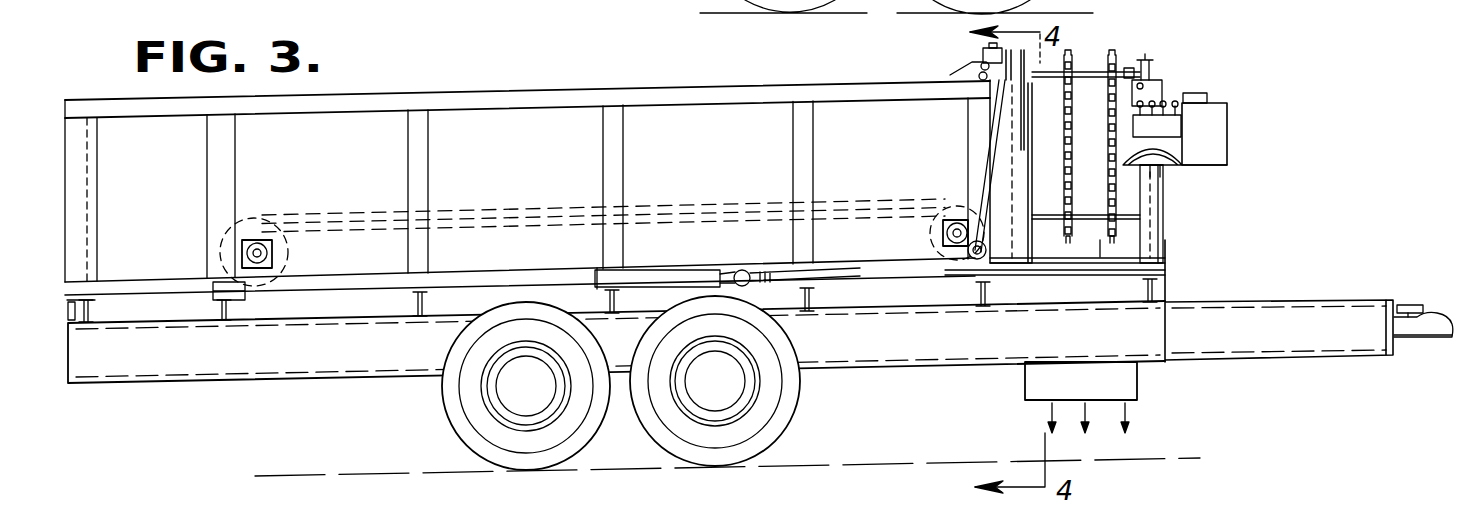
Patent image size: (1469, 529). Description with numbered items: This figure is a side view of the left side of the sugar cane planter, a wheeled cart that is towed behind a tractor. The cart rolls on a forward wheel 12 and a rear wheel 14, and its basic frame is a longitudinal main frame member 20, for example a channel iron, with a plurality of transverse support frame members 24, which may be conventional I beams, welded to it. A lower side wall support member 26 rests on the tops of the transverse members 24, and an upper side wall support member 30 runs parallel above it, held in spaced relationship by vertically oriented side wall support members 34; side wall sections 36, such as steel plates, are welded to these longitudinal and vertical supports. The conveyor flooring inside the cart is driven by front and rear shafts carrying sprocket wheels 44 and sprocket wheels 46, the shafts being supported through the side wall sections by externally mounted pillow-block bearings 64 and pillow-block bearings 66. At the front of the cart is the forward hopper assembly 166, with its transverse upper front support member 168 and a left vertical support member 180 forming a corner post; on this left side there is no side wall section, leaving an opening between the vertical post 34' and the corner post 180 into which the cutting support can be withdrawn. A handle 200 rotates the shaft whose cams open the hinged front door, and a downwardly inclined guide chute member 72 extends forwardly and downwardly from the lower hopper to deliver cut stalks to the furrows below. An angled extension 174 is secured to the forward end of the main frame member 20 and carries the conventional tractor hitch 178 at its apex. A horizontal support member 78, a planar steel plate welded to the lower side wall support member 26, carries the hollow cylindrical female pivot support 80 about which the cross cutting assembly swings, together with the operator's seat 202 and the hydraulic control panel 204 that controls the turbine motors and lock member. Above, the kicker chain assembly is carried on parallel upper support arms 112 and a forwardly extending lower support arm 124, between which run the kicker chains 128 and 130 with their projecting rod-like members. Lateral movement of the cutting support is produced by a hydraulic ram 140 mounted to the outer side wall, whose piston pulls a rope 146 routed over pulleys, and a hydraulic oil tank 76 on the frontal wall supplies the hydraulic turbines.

The forward wheel 12 is at (710, 467).
The rear wheel 14 is at (542, 472).
The main frame member 20 is at (293, 384).
The support frame member 24 is at (217, 303).
The lower side wall support member 26 is at (147, 281).
The upper side wall support member 30 is at (315, 118).
The vertical side wall support member 34 is at (456, 189).
The vertical post 34' is at (931, 178).
The side wall section 36 is at (883, 125).
The sprocket wheel 44 is at (603, 226).
The sprocket wheel 46 is at (290, 246).
The bearing 64 is at (957, 220).
The pillow-block type bearing 66 is at (256, 240).
The guide chute member 72 is at (1140, 386).
The hydraulic oil tank 76 is at (1228, 150).
The horizontal support member 78 is at (1165, 267).
The female pivot support 80 is at (1037, 248).
The upper support arm 112 is at (1128, 70).
The lower support arm 124 is at (1092, 221).
The kicker chain 128 is at (1107, 152).
The kicker chain 130 is at (1088, 145).
The hydraulic ram 140 is at (377, 292).
The rope 146 is at (860, 273).
The forward hopper assembly 166 is at (1262, 217).
The transverse upper front support member 168 is at (1163, 87).
The angled extension 174 is at (1290, 359).
The tractor hitch 178 is at (1425, 340).
The vertical support member 180 is at (1164, 230).
The handle 200 is at (1164, 195).
The operator's seat 202 is at (1210, 166).
The hydraulic control panel 204 is at (1185, 127).